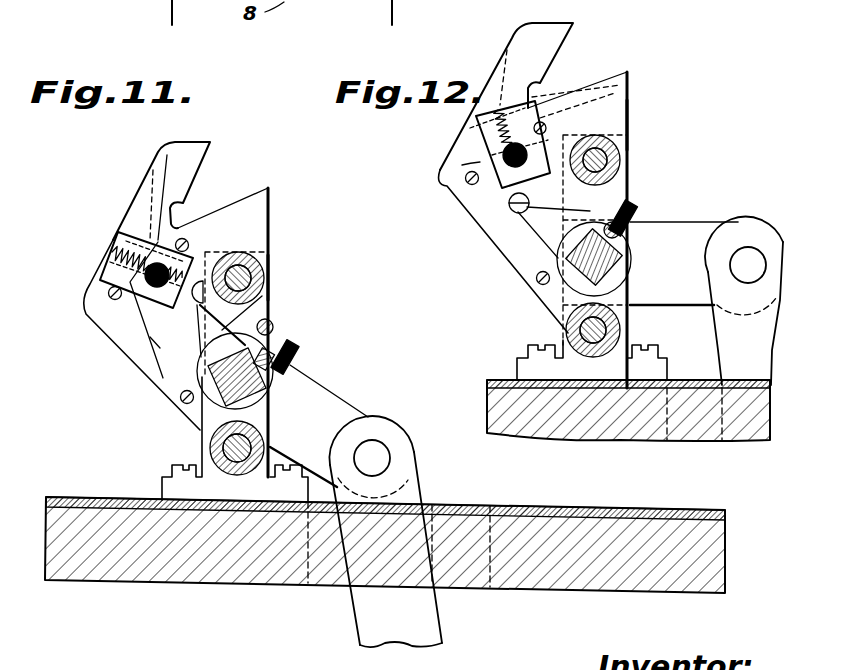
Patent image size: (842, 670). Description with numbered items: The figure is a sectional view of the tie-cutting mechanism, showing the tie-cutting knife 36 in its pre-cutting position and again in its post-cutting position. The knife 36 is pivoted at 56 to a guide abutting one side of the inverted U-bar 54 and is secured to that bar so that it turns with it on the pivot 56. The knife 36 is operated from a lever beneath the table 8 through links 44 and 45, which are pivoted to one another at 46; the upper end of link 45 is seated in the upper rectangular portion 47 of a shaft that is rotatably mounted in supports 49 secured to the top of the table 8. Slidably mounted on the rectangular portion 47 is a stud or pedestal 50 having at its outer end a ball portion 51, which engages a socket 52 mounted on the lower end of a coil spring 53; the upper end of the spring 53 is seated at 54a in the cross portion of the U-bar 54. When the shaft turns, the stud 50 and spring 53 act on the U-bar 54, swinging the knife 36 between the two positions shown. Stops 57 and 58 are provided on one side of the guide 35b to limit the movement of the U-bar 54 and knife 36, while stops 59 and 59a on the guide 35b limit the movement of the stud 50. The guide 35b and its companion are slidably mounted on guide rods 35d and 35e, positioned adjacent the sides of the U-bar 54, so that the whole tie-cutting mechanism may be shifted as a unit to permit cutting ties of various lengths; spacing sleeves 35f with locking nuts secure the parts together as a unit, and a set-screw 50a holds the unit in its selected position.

In FIG. 11, the table 8 is at (250, 580).
In FIG. 12, the table 8 is at (630, 436).
In FIG. 11, the guide 35b is at (198, 150).
In FIG. 12, the guide 35b is at (546, 32).
In FIG. 11, the guide rod 35d is at (245, 252).
In FIG. 12, the guide rod 35d is at (628, 142).
In FIG. 11, the guide rod 35e is at (210, 447).
In FIG. 12, the guide rod 35e is at (602, 355).
In FIG. 11, the spacing sleeve 35f is at (268, 262).
In FIG. 12, the spacing sleeve 35f is at (627, 115).
In FIG. 11, the tie-cutting knife 36 is at (132, 219).
In FIG. 12, the tie-cutting knife 36 is at (555, 95).
In FIG. 11, the link 44 is at (412, 488).
In FIG. 12, the link 44 is at (720, 338).
In FIG. 11, the link 45 is at (318, 386).
In FIG. 12, the link 45 is at (677, 222).
In FIG. 11, the pivot 46 is at (374, 450).
In FIG. 12, the pivot 46 is at (747, 255).
In FIG. 11, the rectangular portion of shaft 47 is at (270, 328).
In FIG. 12, the rectangular portion of shaft 47 is at (622, 264).
In FIG. 11, the support 49 is at (170, 487).
In FIG. 12, the support 49 is at (620, 358).
In FIG. 11, the stud or pedestal 50 is at (255, 292).
In FIG. 12, the stud or pedestal 50 is at (550, 238).
In FIG. 11, the set-screw 50a is at (290, 353).
In FIG. 12, the set-screw 50a is at (615, 195).
In FIG. 11, the ball portion 51 is at (197, 310).
In FIG. 12, the ball portion 51 is at (512, 214).
In FIG. 11, the socket 52 is at (192, 305).
In FIG. 12, the socket 52 is at (510, 210).
In FIG. 11, the coil spring 53 is at (148, 294).
In FIG. 12, the coil spring 53 is at (504, 157).
In FIG. 11, the inverted U-bar 54 is at (132, 203).
In FIG. 12, the inverted U-bar 54 is at (490, 134).
In FIG. 11, the spring seat 54a is at (110, 262).
In FIG. 12, the spring seat 54a is at (501, 66).
In FIG. 11, the pivot 56 is at (150, 338).
In FIG. 12, the pivot 56 is at (465, 165).
In FIG. 11, the stop 57 is at (178, 247).
In FIG. 12, the stop 57 is at (548, 137).
In FIG. 11, the stop 58 is at (113, 301).
In FIG. 12, the stop 58 is at (468, 184).
In FIG. 11, the stop 59 is at (270, 320).
In FIG. 12, the stop 59 is at (630, 213).
In FIG. 11, the stop 59a is at (180, 398).
In FIG. 12, the stop 59a is at (540, 284).